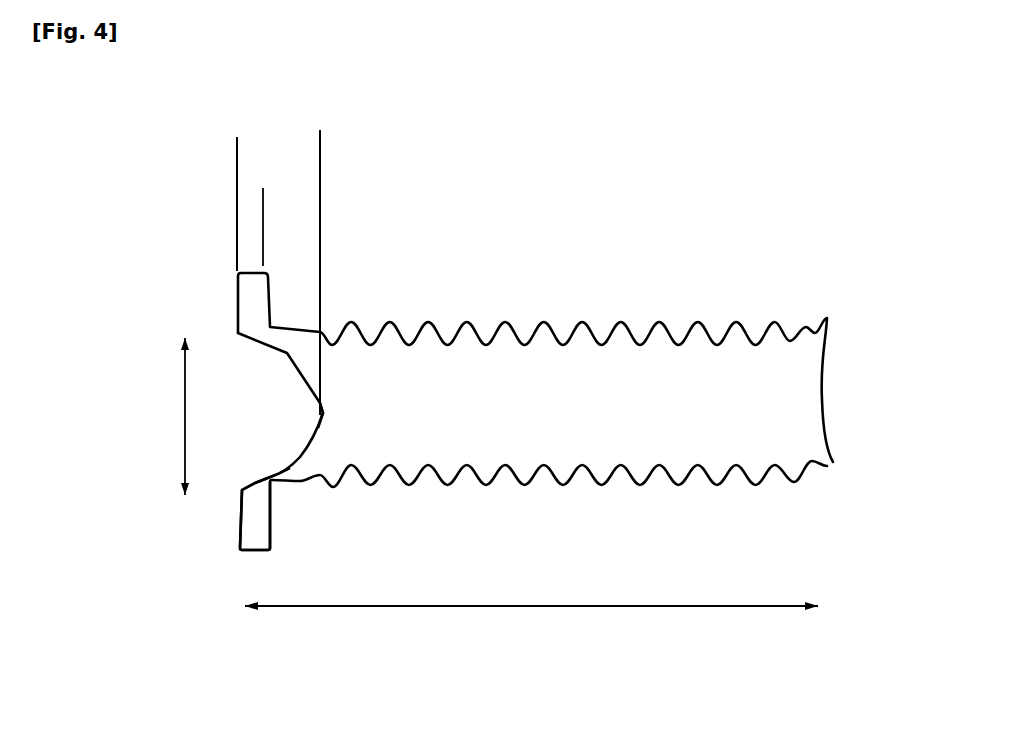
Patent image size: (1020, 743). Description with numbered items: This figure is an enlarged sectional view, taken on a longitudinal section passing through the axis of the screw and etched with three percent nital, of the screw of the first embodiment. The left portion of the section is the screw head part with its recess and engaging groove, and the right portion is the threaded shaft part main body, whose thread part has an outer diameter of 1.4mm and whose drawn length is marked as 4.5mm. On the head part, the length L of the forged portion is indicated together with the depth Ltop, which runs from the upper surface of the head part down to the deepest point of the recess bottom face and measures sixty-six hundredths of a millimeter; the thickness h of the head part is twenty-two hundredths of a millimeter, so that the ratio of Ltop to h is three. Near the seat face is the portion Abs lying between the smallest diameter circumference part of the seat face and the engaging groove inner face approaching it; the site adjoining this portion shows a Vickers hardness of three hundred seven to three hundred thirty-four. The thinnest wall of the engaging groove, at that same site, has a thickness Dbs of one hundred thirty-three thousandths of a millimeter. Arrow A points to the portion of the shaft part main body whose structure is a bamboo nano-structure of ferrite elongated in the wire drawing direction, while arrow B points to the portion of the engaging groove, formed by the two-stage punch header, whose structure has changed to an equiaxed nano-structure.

The arrow A (shaft part main body portion) A is at (687, 405).
The arrow B (engaging groove portion) B is at (333, 410).
The length of forged portion L is at (320, 148).
The depth from upper surface of screw head part to deepest point of recess bottom fa Ltop is at (278, 254).
The thickness of screw head part h is at (292, 201).
The outer diameter of thread part 1.4mm is at (183, 400).
The portion between smallest diameter circumference part of seat face and engaging g Abs is at (266, 471).
The thickness of thinnest wall thickness part of engaging groove Dbs is at (262, 489).
The shaft length dimension 4.5mm is at (531, 624).